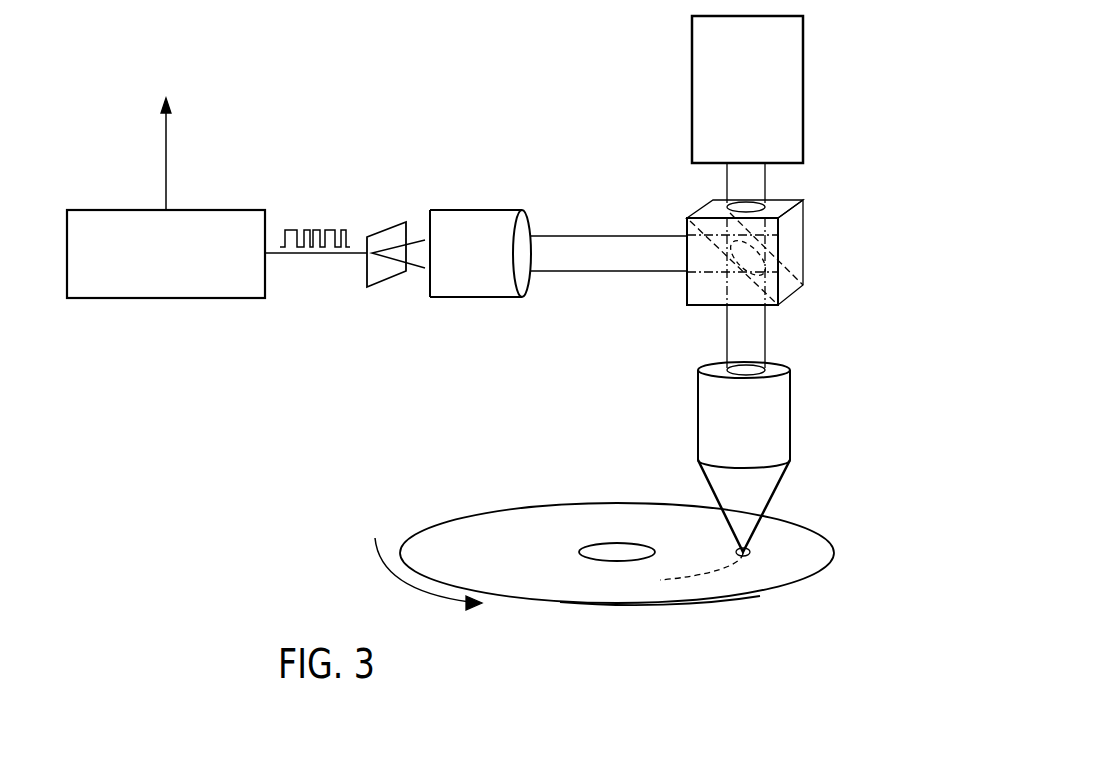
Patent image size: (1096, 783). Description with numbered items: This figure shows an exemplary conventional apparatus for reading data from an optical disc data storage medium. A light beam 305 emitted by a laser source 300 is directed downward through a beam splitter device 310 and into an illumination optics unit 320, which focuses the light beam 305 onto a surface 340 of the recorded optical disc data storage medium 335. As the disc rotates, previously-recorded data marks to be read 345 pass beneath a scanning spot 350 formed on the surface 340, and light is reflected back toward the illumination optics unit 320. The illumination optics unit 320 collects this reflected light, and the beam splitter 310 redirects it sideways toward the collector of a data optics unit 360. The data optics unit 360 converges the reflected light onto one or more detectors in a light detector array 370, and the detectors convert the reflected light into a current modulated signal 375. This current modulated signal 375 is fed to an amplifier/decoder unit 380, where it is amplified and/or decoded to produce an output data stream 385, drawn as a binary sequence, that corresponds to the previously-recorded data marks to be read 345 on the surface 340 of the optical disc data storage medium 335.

The laser source 300 is at (800, 47).
The light beam 305 is at (767, 177).
The beam splitter device 310 is at (795, 230).
The illumination optics unit 320 is at (792, 390).
The optical disc data storage medium 335 is at (707, 602).
The surface 340 is at (445, 533).
The data marks to be read 345 is at (700, 573).
The scanning spot 350 is at (750, 556).
The data optics unit 360 is at (453, 210).
The light detector array 370 is at (383, 283).
The current modulated signal 375 is at (320, 196).
The amplifier/decoder unit 380 is at (207, 298).
The output data stream 385 is at (263, 109).